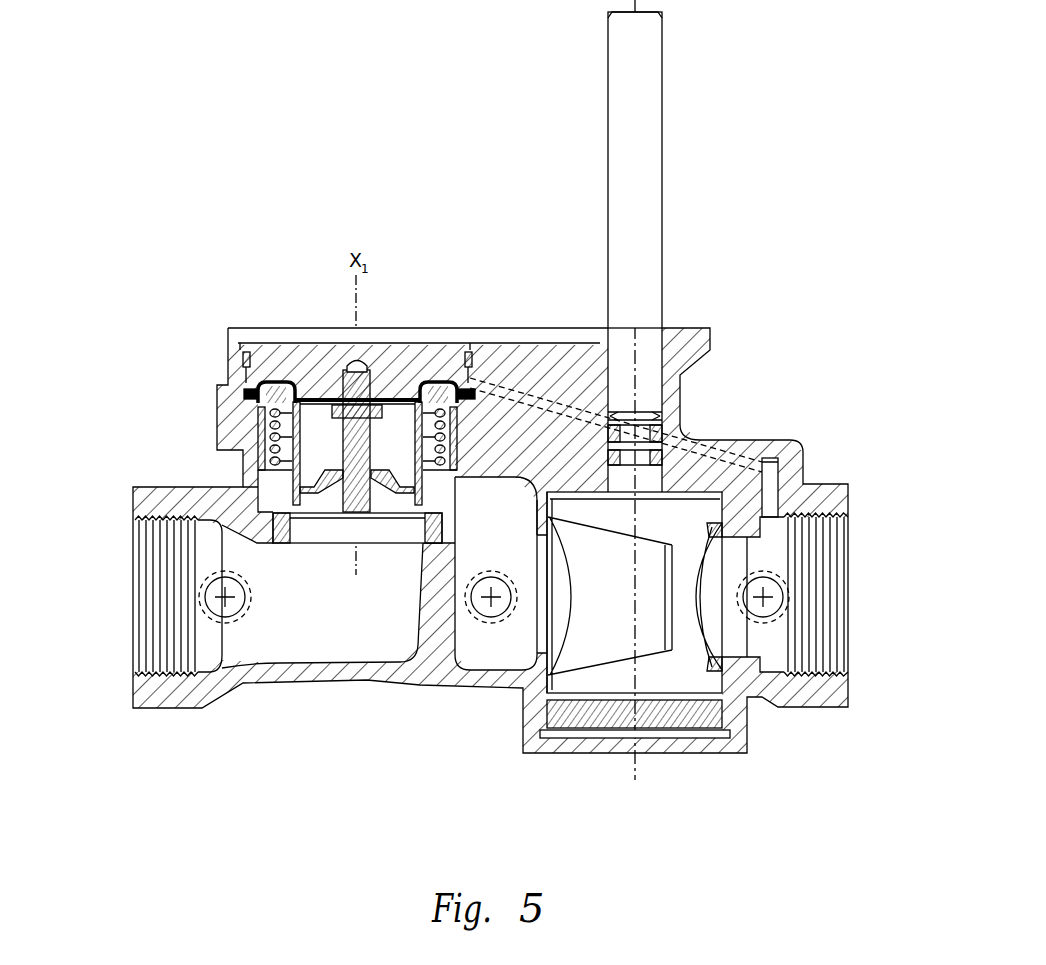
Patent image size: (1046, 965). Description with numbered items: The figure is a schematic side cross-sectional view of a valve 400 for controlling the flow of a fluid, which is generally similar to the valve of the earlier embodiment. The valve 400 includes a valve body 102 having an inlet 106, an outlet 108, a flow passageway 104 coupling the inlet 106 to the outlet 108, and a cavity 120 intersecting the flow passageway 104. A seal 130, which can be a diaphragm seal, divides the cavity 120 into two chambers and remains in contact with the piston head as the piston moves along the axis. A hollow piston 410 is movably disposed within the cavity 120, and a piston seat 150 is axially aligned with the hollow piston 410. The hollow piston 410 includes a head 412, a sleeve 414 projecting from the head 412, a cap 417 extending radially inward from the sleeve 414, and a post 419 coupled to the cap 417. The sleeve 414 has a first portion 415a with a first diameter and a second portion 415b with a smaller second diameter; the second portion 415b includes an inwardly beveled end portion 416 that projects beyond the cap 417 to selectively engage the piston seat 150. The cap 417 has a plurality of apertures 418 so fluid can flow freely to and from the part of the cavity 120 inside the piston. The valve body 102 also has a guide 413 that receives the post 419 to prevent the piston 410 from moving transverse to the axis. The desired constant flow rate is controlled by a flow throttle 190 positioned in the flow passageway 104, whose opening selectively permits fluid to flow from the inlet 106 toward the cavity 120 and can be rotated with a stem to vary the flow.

The valve 400 is at (795, 268).
The valve body 102 is at (503, 328).
The flow passageway 104 is at (480, 648).
The inlet 106 is at (848, 578).
The outlet 108 is at (133, 633).
The cavity 120 is at (272, 490).
The seal 130 is at (330, 396).
The piston seat 150 is at (425, 525).
The flow throttle 190 is at (685, 490).
The hollow piston 410 is at (258, 404).
The head 412 is at (284, 396).
The guide 413 is at (380, 364).
The sleeve 414 is at (275, 426).
The first portion 415a is at (446, 420).
The second portion 415b is at (420, 480).
The end portion 416 is at (306, 492).
The cap 417 is at (332, 489).
The apertures 418 is at (440, 520).
The post 419 is at (383, 350).